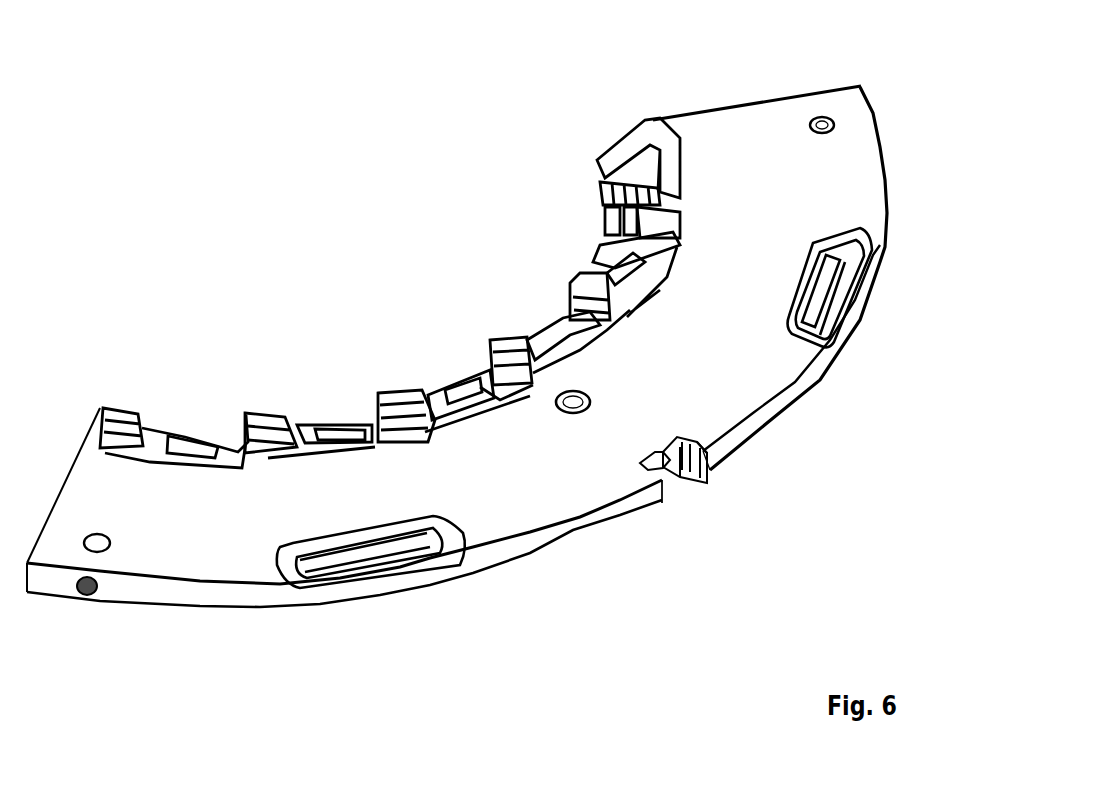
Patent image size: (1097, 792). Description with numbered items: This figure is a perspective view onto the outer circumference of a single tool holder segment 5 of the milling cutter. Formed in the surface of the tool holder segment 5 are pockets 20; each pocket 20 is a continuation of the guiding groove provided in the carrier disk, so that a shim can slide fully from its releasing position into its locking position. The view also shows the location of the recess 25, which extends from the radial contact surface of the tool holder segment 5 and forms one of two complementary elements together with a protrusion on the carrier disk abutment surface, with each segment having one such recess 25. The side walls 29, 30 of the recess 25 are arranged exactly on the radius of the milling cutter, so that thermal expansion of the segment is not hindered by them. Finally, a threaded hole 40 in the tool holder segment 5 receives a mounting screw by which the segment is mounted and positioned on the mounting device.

The tool holder segment 5 is at (218, 508).
The pocket 20 is at (375, 556).
The recess 25 is at (681, 506).
The side wall 29 is at (697, 462).
The side wall 30 is at (659, 455).
The threaded hole 40 is at (570, 397).